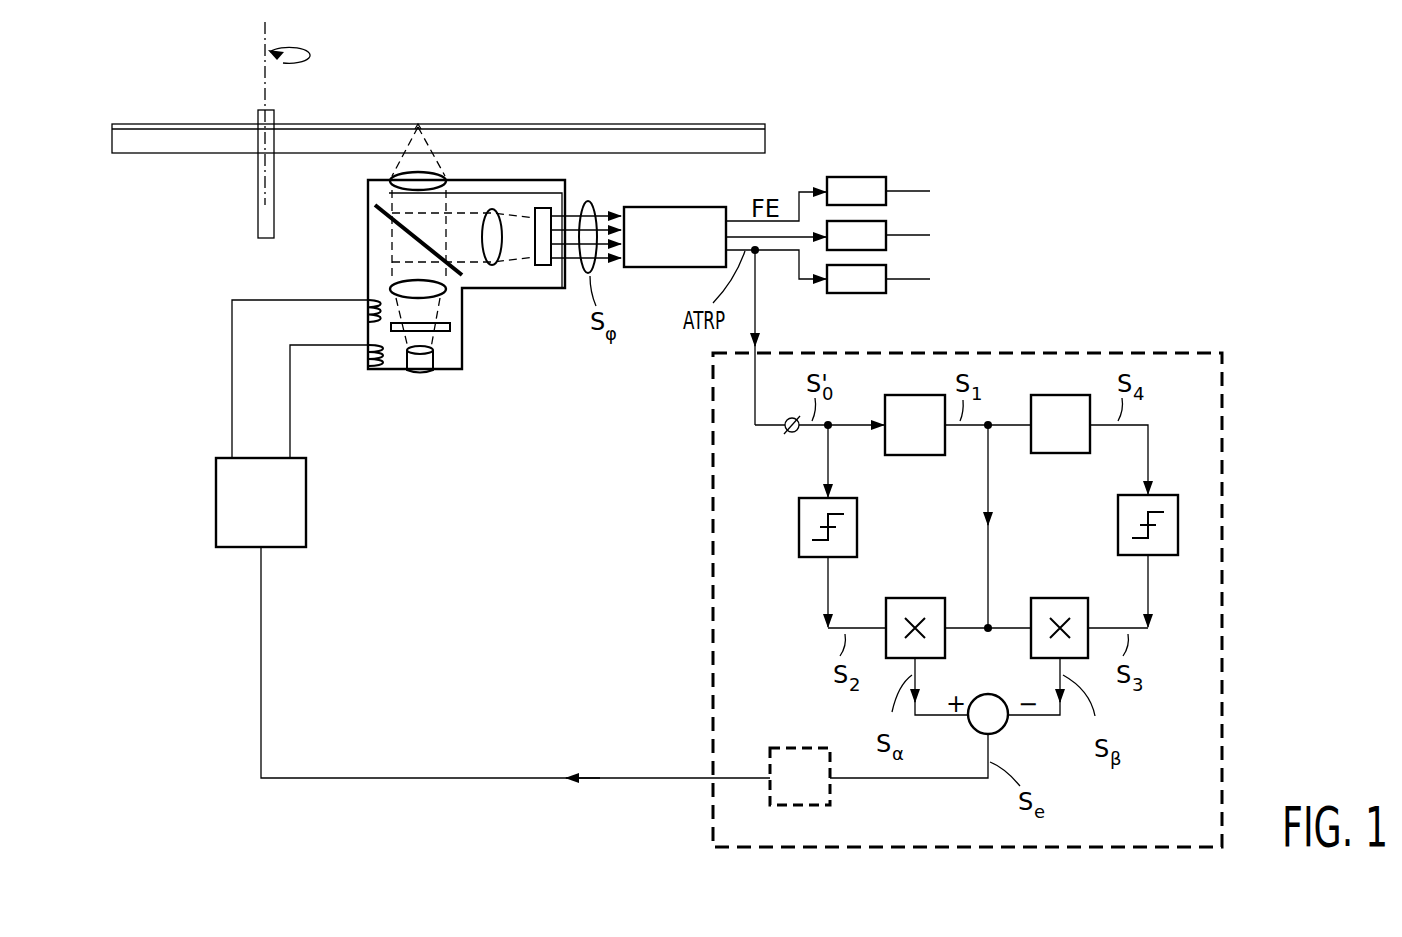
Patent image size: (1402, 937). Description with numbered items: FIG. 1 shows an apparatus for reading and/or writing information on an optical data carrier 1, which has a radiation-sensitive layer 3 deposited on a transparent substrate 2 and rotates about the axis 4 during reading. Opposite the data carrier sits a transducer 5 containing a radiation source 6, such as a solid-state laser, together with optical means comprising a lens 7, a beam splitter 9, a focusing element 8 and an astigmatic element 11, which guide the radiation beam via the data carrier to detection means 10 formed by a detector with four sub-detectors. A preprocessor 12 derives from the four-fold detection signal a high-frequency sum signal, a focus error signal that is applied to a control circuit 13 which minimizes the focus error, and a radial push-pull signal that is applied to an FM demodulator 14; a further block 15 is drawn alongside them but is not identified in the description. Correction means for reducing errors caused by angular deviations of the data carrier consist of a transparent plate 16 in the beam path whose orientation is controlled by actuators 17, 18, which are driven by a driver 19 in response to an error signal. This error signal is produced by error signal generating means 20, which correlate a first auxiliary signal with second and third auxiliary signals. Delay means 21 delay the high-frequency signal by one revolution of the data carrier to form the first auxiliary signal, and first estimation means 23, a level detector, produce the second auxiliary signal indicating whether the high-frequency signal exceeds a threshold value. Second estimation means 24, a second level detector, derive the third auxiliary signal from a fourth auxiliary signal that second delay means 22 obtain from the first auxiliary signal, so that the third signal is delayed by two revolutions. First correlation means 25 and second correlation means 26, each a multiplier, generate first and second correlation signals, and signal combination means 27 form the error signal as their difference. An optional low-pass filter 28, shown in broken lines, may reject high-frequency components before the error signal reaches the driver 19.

The optical data carrier 1 is at (382, 119).
The transparent substrate 2 is at (296, 145).
The radiation-sensitive layer 3 is at (327, 124).
The axis 4 is at (262, 32).
The transducer 5 is at (457, 372).
The radiation source 6 is at (420, 376).
The lens 7 is at (400, 281).
The focusing element 8 is at (392, 181).
The beam splitter 9 is at (376, 216).
The detection means 10 is at (543, 266).
The astigmatic element 11 is at (492, 266).
The preprocessor 12 is at (650, 268).
The control circuit 13 is at (870, 177).
The FM demodulator 14 is at (886, 226).
The circuit block 15 is at (870, 293).
The transparent plate 16 is at (450, 326).
The actuator 17 is at (373, 298).
The actuator 18 is at (384, 376).
The driver 19 is at (216, 500).
The error signal generating means 20 is at (712, 619).
The delay means 21 is at (915, 455).
The second delay means 22 is at (1057, 453).
The first estimation means 23 is at (799, 525).
The second estimation means 24 is at (1118, 524).
The first correlation means 25 is at (907, 598).
The second correlation means 26 is at (1055, 598).
The signal combination means 27 is at (1006, 732).
The low-pass filter 28 is at (797, 745).